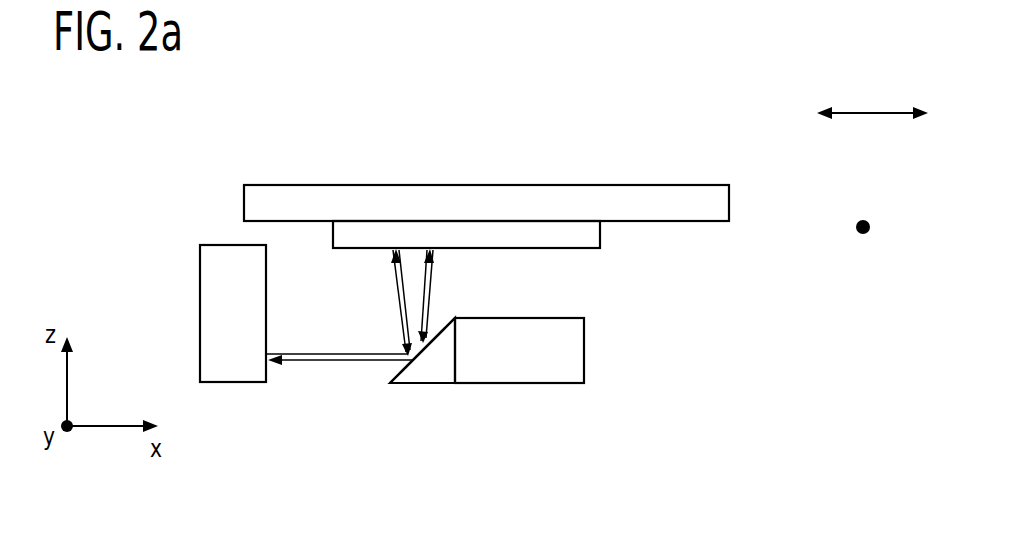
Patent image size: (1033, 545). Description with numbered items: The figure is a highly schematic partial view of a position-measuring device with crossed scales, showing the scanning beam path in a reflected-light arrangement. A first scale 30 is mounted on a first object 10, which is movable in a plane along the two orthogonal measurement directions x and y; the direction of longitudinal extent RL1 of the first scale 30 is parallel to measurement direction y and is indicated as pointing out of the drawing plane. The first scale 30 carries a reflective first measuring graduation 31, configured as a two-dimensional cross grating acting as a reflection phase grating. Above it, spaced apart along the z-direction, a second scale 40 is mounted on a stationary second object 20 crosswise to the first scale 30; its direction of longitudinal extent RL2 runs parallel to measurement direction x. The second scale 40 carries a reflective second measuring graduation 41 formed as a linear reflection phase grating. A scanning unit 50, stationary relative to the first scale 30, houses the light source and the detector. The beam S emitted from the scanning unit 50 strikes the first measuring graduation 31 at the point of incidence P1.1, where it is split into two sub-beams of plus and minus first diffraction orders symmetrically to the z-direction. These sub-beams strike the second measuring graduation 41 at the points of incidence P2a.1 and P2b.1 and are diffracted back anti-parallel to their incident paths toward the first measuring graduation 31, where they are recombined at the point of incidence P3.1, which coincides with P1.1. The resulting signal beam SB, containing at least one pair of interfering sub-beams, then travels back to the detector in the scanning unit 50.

The first object 10 is at (568, 350).
The second object 20 is at (658, 198).
The first scale 30 is at (415, 370).
The first measuring graduation 31 is at (395, 371).
The second scale 40 is at (602, 236).
The second measuring graduation 41 is at (573, 250).
The scanning unit 50 is at (213, 283).
The beam S is at (339, 399).
The signal beam SB is at (305, 363).
The first point of incidence P1.1 is at (479, 382).
The third point of incidence P3.1 is at (422, 368).
The point of incidence P2a.1 is at (386, 254).
The point of incidence P2b.1 is at (438, 254).
The direction of longitudinal extent of first scale RL1 is at (883, 229).
The direction of longitudinal extent of second scale RL2 is at (872, 94).